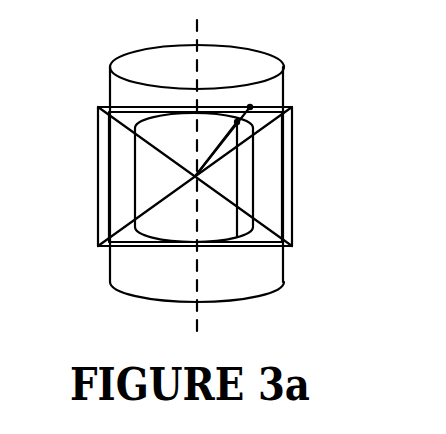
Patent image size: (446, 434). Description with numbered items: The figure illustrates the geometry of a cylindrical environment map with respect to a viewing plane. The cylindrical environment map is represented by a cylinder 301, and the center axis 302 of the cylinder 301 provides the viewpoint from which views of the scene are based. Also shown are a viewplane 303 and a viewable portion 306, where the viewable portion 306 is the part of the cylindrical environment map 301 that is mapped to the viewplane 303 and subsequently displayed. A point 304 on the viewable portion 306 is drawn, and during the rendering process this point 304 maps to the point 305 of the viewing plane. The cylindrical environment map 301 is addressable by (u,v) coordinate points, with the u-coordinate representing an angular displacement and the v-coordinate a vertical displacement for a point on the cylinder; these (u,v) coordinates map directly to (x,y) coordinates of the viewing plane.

The cylinder 301 is at (292, 62).
The center axis 302 is at (196, 338).
The viewplane 303 is at (292, 195).
The point 304 is at (237, 122).
The point 305 is at (250, 107).
The viewable portion 306 is at (137, 190).